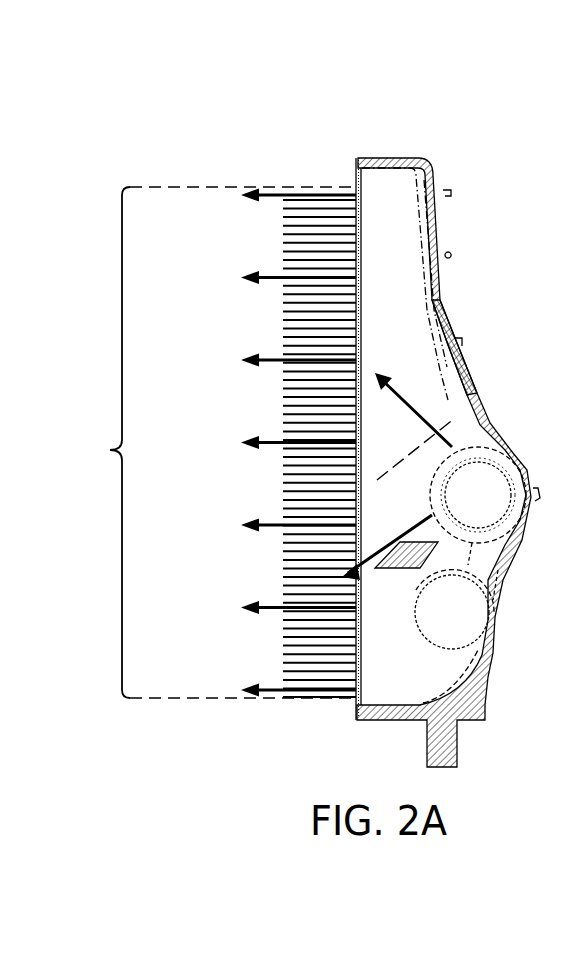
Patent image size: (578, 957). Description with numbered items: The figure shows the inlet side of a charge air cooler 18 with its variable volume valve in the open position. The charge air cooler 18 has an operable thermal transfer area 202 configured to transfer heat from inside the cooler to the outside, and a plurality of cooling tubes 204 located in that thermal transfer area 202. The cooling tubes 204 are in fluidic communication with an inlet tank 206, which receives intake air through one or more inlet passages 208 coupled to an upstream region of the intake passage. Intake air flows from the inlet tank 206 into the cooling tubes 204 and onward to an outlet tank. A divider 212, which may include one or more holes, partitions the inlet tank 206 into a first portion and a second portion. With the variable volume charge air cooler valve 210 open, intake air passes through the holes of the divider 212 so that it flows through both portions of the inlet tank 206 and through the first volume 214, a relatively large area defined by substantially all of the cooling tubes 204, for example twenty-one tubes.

The charge air cooler 18 is at (324, 434).
The operable thermal transfer area 202 is at (281, 413).
The cooling tubes 204 is at (289, 258).
The inlet tank 206 is at (440, 258).
The inlet passages 208 is at (510, 487).
The variable volume charge air cooler valve 210 is at (458, 352).
The divider 212 is at (417, 447).
The first volume 214 is at (213, 442).